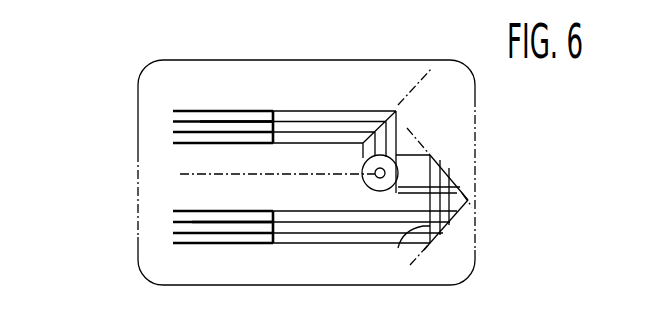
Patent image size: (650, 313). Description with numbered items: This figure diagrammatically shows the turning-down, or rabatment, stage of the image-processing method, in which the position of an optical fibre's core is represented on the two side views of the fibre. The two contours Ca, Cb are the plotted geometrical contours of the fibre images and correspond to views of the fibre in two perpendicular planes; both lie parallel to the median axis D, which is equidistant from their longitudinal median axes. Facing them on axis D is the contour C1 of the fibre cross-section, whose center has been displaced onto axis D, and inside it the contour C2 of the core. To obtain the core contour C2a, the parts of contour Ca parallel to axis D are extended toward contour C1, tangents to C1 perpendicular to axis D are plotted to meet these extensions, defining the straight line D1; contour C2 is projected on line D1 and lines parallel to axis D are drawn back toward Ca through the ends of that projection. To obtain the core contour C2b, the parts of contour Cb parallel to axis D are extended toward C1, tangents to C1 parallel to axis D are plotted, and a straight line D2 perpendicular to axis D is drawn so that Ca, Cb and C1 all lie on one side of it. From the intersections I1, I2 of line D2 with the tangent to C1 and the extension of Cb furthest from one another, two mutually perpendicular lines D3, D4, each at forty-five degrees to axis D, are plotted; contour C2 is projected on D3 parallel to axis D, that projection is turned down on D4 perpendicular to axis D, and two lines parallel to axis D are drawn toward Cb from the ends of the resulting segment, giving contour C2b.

The geometrical contour of image 2a Ca is at (205, 111).
The geometrical contour of image 2b Cb is at (190, 248).
The contour of the core on image Ca C2a is at (200, 127).
The contour of the core on image Cb C2b is at (192, 228).
The median axis D is at (198, 175).
The contour of the fibre cross-section C1 is at (362, 172).
The contour of the fibre core C2 is at (376, 177).
The straight line D1 is at (445, 102).
The straight line D2 is at (417, 235).
The line D3 is at (420, 143).
The line D4 is at (424, 250).
The intersection I1 is at (430, 155).
The intersection I2 is at (437, 243).